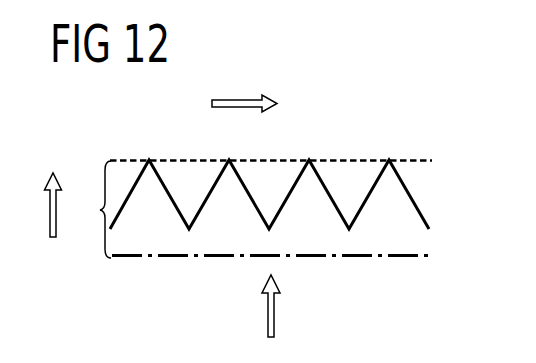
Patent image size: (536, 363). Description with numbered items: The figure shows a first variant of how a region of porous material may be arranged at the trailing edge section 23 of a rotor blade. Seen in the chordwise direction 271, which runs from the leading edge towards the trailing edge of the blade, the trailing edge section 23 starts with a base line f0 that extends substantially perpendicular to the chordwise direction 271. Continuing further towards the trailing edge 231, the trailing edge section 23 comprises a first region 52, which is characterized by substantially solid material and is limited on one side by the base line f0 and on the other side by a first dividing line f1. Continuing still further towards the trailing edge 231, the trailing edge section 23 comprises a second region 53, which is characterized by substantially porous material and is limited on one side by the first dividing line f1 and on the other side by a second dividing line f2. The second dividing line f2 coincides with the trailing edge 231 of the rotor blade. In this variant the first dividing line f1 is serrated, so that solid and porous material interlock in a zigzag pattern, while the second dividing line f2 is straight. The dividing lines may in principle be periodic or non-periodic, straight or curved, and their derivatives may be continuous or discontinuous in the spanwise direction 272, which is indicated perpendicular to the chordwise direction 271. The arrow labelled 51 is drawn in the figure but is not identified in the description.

The trailing edge section 23 is at (88, 209).
The first direction 51 is at (273, 308).
The first region 52 is at (228, 218).
The second region 53 is at (265, 182).
The trailing edge 231 is at (415, 160).
The chordwise direction 271 is at (53, 238).
The spanwise direction 272 is at (240, 103).
The base line f0 is at (283, 267).
The first dividing line f1 is at (422, 212).
The second dividing line f2 is at (295, 124).